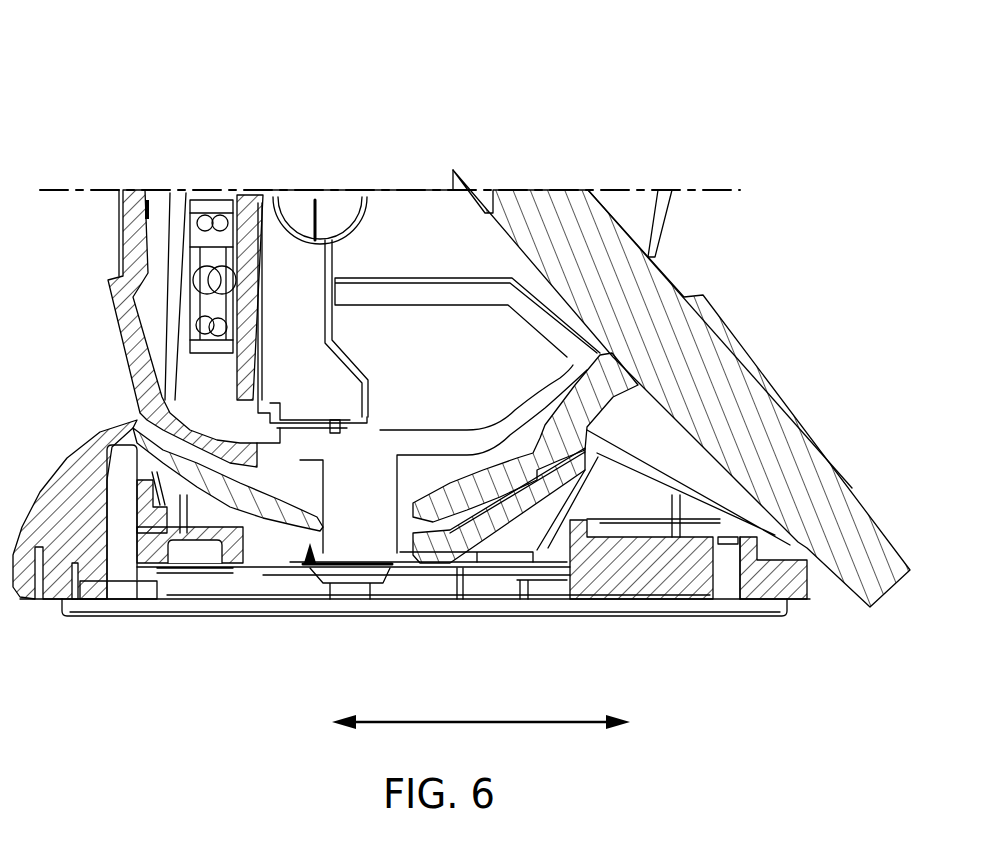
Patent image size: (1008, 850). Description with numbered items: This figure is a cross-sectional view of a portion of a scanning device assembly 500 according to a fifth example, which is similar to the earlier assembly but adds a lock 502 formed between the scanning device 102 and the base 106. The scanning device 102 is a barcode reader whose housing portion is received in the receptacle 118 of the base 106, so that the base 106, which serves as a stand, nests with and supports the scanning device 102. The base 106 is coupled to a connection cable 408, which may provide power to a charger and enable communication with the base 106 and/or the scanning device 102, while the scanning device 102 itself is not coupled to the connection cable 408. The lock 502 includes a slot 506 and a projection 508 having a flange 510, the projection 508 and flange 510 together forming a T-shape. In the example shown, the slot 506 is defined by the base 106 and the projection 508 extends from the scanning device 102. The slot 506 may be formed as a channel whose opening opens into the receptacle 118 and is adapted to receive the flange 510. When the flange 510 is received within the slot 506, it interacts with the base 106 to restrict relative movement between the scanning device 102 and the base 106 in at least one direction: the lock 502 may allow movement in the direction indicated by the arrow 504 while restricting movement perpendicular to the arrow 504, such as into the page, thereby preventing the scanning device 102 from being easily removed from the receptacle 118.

The scanning device assembly 500 is at (137, 47).
The scanning device 102 is at (114, 297).
The receptacle 118 is at (136, 424).
The base 106 is at (25, 590).
The connection cable 408 is at (727, 390).
The projection 508 is at (395, 487).
The flange 510 is at (360, 556).
The lock 502 is at (309, 567).
The slot 506 is at (392, 560).
The arrow 504 is at (522, 720).